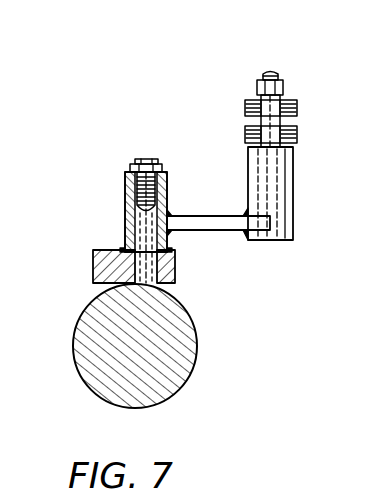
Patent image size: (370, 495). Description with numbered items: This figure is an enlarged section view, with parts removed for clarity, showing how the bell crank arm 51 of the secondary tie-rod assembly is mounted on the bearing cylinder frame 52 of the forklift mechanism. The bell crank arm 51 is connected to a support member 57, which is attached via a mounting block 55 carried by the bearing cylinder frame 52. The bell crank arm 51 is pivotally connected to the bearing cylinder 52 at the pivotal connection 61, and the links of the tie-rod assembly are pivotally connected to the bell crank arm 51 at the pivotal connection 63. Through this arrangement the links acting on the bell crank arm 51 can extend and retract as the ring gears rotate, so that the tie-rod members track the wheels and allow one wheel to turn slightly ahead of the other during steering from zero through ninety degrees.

The bell crank arm 51 is at (185, 220).
The bearing cylinder frame 52 is at (188, 342).
The mounting block 55 is at (93, 262).
The support member 57 is at (125, 205).
The pivotal connection 61 is at (262, 75).
The pivotal connection 63 is at (298, 131).